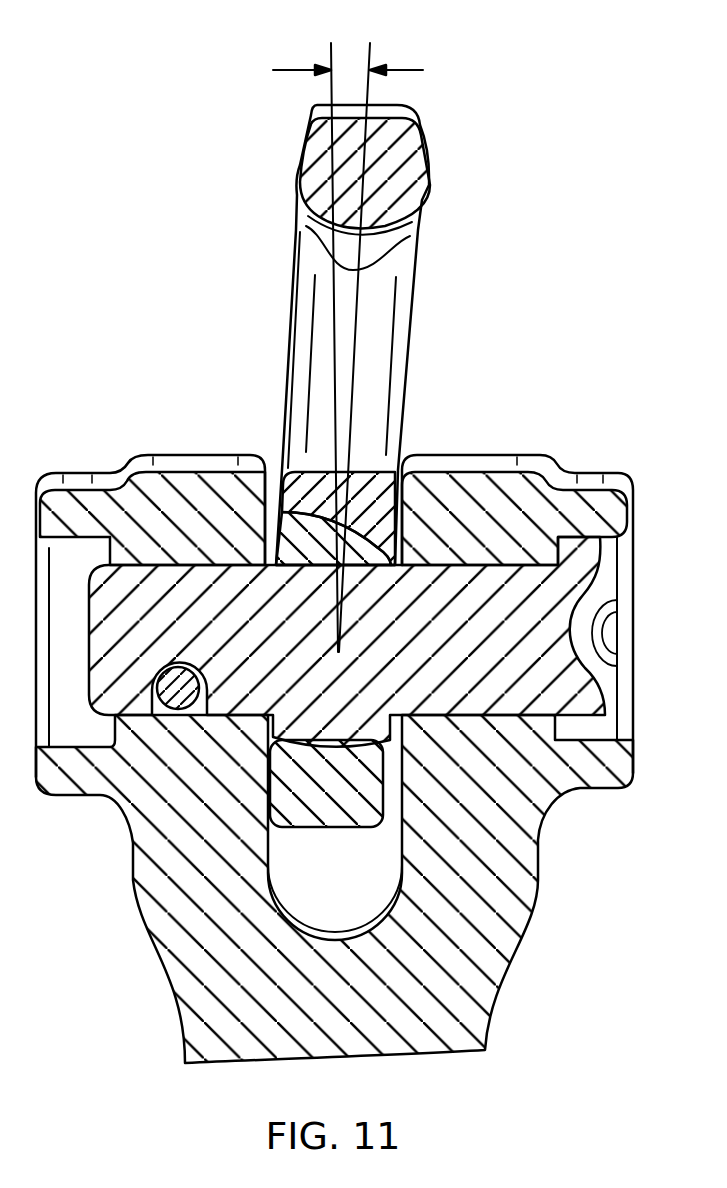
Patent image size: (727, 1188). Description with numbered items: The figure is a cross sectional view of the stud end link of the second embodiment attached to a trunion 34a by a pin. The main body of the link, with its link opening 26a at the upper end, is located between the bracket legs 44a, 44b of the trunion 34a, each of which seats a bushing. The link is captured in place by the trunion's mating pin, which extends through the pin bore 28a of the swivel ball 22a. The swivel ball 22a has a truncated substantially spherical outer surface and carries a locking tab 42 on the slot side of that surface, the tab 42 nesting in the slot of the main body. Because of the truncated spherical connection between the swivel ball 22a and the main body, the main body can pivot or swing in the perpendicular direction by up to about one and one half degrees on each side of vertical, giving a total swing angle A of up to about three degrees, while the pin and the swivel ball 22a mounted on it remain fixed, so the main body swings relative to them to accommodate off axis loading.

The swing angle A is at (294, 70).
The link opening 26a is at (383, 298).
The locking tab 42 is at (322, 465).
The bracket leg 44a is at (197, 472).
The bracket leg 44b is at (481, 473).
The pin bore 28a is at (340, 717).
The swivel ball 22a is at (330, 738).
The trunion 34a is at (93, 993).